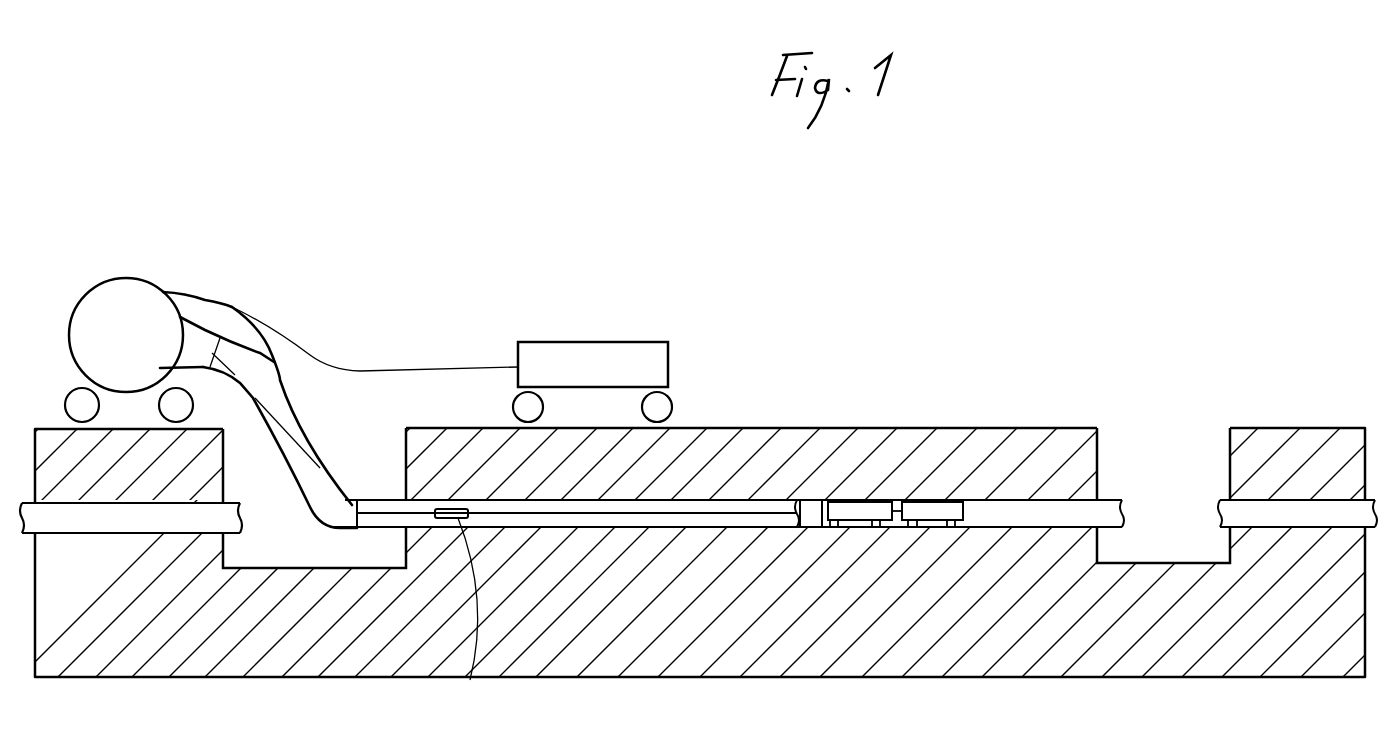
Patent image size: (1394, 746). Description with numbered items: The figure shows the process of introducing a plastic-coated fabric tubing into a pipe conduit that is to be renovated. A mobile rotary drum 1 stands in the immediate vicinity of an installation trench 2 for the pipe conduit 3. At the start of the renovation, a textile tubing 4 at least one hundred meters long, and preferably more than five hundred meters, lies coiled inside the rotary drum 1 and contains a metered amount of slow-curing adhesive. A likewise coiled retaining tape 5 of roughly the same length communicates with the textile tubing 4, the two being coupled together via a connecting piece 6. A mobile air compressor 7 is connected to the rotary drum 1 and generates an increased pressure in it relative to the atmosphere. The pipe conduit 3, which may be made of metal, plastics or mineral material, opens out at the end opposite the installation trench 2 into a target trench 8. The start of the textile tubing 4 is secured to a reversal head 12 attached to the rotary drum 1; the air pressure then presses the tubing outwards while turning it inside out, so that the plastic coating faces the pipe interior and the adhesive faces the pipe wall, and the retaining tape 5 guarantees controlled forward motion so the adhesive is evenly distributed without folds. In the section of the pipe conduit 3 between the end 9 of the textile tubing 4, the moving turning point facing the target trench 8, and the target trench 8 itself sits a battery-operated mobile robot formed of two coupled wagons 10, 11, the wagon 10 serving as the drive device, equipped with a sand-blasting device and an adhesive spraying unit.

The rotary drum 1 is at (128, 302).
The installation trench 2 is at (247, 562).
The pipe conduit 3 is at (1112, 500).
The textile tubing 4 is at (283, 386).
The retaining tape 5 is at (422, 513).
The connecting piece 6 is at (468, 621).
The air compressor 7 is at (563, 360).
The target trench 8 is at (1188, 553).
The end of the textile tubing 9 is at (803, 497).
The wagon 10 is at (937, 502).
The wagon 11 is at (870, 502).
The reversal head 12 is at (207, 327).